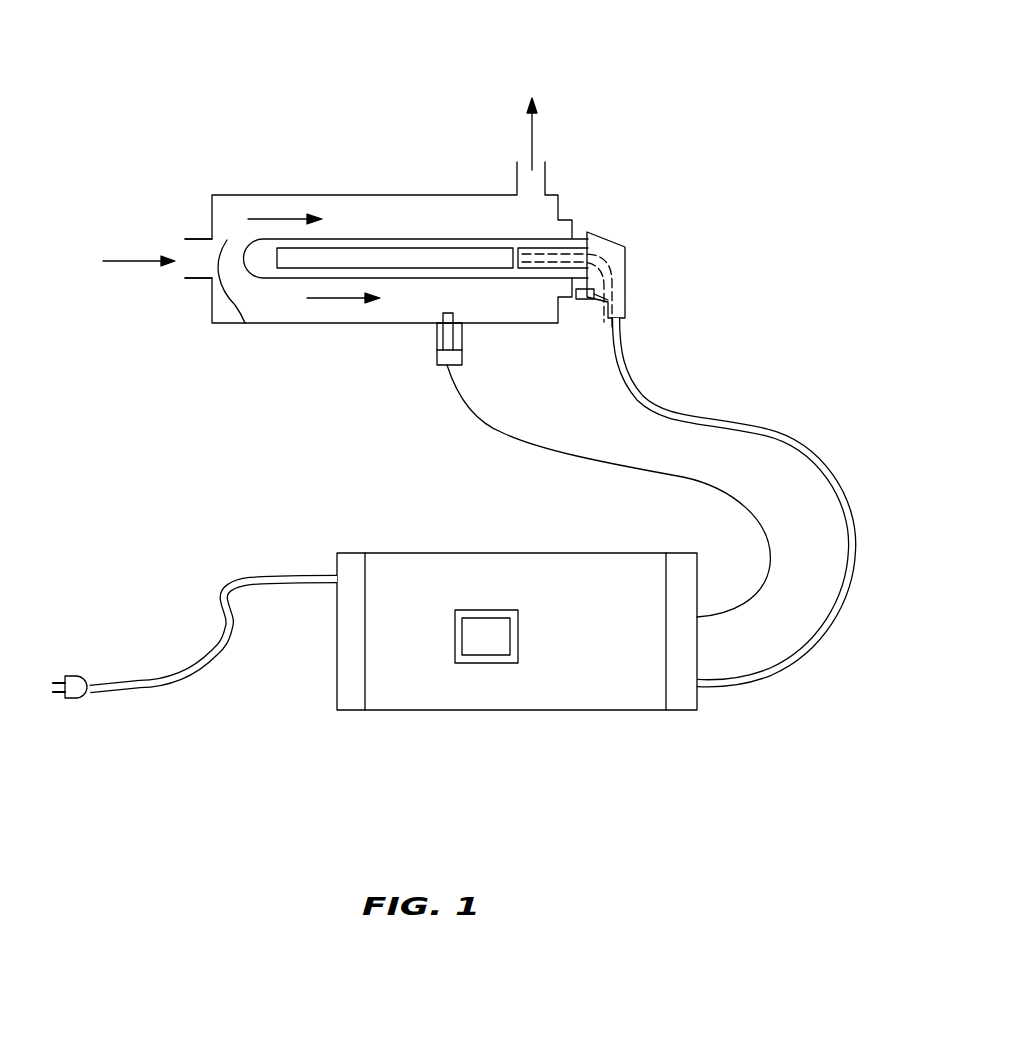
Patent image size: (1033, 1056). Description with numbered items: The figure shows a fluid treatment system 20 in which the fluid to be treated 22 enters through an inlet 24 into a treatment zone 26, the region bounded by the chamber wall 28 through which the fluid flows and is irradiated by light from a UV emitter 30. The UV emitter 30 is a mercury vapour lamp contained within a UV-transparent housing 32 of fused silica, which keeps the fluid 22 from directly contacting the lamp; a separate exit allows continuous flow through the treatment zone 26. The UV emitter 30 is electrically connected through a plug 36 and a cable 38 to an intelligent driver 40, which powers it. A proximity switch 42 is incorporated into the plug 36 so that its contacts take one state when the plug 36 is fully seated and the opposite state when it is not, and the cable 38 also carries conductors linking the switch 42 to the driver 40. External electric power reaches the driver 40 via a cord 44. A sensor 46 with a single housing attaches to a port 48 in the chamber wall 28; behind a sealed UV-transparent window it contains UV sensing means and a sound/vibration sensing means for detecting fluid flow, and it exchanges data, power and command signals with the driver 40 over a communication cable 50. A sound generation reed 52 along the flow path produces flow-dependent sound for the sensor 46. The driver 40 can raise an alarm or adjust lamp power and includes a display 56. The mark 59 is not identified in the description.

The fluid treatment system 20 is at (232, 147).
The fluid to be treated 22 is at (326, 184).
The inlet 24 is at (200, 238).
The treatment zone 26 is at (271, 212).
The chamber wall 28 is at (327, 193).
The UV emitter 30 is at (370, 247).
The UV-transparent housing 32 is at (435, 237).
The plug 36 is at (627, 245).
The cable 38 is at (715, 417).
The intelligent driver 40 is at (447, 710).
The proximity switch 42 is at (580, 300).
The cord 44 is at (178, 670).
The sensor 46 is at (462, 355).
The port 48 is at (437, 352).
The communication cable 50 is at (512, 435).
The sound generation reed 52 is at (245, 323).
The display 56 is at (495, 665).
The outlet temperature point 59 is at (525, 205).